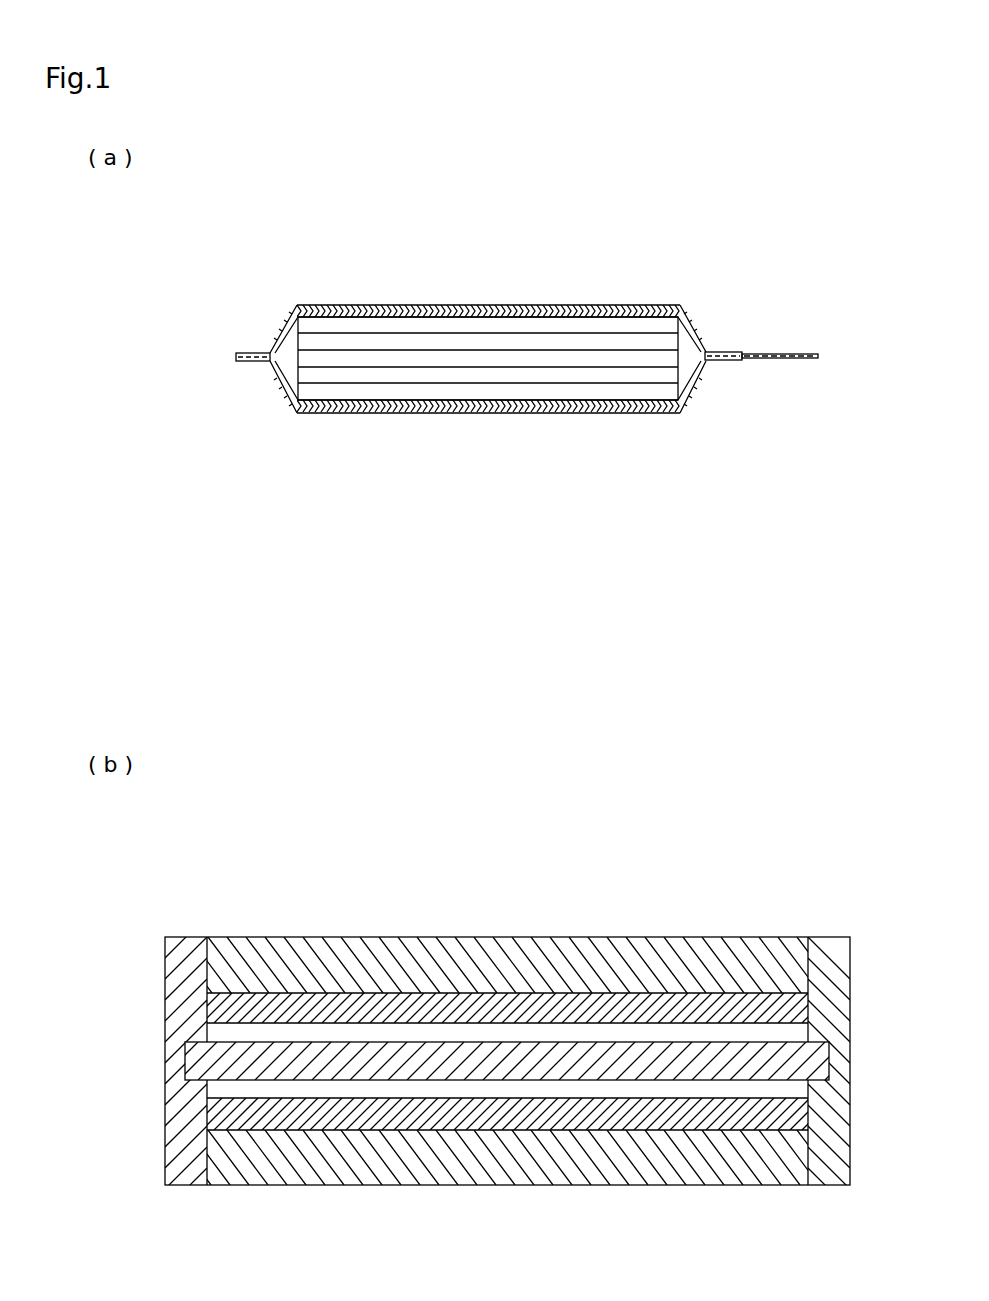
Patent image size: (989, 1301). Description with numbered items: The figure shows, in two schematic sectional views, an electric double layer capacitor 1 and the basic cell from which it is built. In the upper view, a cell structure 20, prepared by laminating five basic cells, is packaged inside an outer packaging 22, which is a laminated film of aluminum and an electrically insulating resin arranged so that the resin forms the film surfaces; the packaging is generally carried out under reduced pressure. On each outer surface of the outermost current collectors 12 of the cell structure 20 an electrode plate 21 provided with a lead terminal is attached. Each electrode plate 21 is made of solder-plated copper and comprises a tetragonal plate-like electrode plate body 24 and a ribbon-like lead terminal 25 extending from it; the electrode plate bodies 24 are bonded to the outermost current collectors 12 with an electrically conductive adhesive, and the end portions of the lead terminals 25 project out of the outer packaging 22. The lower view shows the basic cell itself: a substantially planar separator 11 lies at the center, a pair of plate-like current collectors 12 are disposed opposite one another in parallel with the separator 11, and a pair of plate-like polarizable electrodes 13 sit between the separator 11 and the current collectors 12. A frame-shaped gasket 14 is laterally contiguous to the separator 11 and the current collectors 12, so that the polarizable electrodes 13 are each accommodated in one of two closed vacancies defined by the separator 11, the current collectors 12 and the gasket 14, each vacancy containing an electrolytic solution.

The battery (laminated cell) 1 is at (571, 286).
The separator 11 is at (357, 1062).
The current collector 12 is at (720, 965).
The polarizable electrode 13 is at (264, 1018).
The gasket 14 is at (822, 1170).
The cell structure 20 is at (284, 347).
The electrode plate provided with a lead terminal 21 is at (435, 305).
The outer packaging 22 is at (692, 312).
The electrode plate body 24 is at (556, 414).
The lead terminal 25 is at (764, 361).